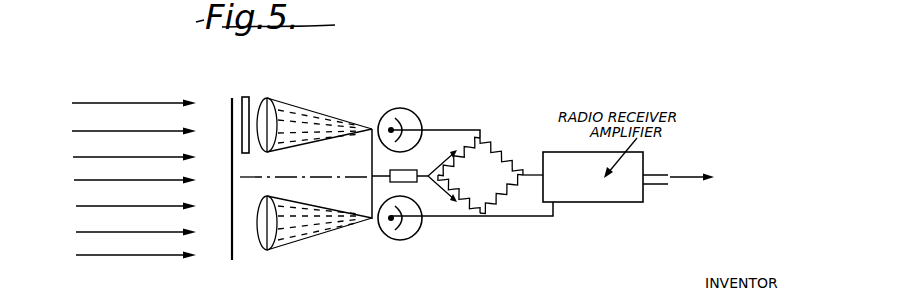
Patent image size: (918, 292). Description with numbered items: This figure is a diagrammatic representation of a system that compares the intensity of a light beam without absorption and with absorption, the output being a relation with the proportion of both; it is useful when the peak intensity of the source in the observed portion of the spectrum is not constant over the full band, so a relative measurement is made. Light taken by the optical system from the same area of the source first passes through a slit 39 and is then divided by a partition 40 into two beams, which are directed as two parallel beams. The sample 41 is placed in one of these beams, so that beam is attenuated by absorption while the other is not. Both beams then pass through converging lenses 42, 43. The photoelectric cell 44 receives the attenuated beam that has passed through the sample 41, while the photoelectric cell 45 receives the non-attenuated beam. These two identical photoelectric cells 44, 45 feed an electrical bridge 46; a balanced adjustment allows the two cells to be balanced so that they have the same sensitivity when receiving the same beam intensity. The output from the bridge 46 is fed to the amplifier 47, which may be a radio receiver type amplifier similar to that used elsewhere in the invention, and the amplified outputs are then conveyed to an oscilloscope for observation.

The slit 39 is at (230, 250).
The partition 40 is at (278, 176).
The sample 41 is at (249, 98).
The converging lens 42 is at (274, 122).
The converging lens 43 is at (272, 240).
The photoelectric cell 44 is at (414, 120).
The photoelectric cell 45 is at (417, 228).
The electrical bridge 46 is at (499, 154).
The amplifier 47 is at (643, 157).